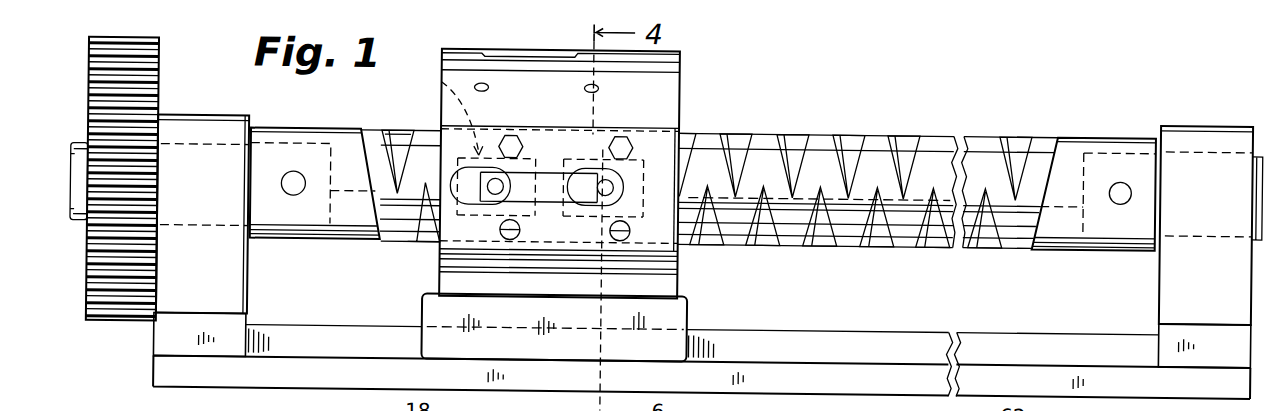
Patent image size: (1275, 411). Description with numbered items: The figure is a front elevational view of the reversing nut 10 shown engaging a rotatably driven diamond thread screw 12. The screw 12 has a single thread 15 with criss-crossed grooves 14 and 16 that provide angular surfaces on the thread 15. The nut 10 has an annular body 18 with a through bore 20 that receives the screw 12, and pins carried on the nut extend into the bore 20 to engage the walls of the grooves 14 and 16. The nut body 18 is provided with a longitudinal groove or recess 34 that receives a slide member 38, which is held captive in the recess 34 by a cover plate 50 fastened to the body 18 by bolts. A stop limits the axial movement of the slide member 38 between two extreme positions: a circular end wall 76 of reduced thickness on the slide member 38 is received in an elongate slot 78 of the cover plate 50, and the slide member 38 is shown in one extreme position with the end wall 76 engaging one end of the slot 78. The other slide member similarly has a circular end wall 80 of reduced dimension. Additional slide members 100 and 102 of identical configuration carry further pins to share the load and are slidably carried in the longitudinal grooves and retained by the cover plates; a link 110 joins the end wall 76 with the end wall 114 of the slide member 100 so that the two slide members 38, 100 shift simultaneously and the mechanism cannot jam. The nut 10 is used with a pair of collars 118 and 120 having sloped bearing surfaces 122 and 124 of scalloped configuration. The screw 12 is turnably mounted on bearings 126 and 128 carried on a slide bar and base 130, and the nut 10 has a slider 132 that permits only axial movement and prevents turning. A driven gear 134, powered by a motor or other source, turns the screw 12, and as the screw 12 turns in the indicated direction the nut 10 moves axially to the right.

The reversing nut 10 is at (728, 81).
The diamond thread screw 12 is at (927, 114).
The criss-crossed groove 14 is at (310, 145).
The single thread 15 is at (403, 143).
The criss-crossed groove 16 is at (425, 150).
The annular body 18 is at (676, 80).
The through bore 20 is at (490, 112).
The longitudinal groove or recess 34 is at (523, 109).
The slide member 38 is at (684, 246).
The cover plate 50 is at (678, 136).
The circular end wall 76 is at (626, 180).
The elongate slot 78 is at (590, 136).
The circular end wall 80 is at (696, 369).
The slide member 100 is at (544, 166).
The slide member 102 is at (702, 368).
The link 110 is at (555, 188).
The end wall 114 is at (512, 179).
The collar 118 is at (275, 134).
The collar 120 is at (1097, 135).
The sloped bearing surface 122 is at (380, 240).
The sloped bearing surface 124 is at (1028, 246).
The bearing 126 is at (207, 127).
The bearing 128 is at (1200, 122).
The slide bar and base 130 is at (526, 372).
The slider 132 is at (422, 298).
The driven gear 134 is at (107, 324).